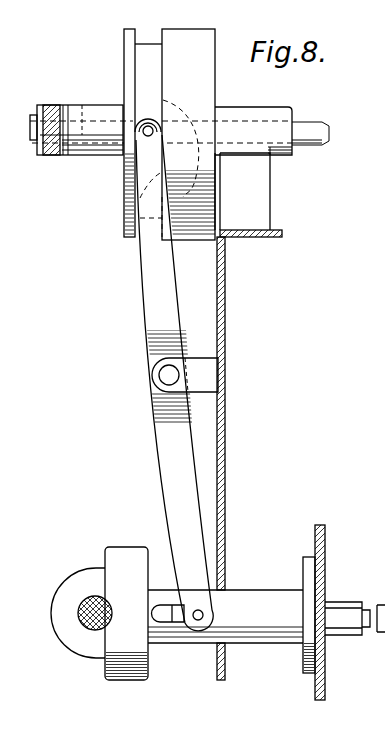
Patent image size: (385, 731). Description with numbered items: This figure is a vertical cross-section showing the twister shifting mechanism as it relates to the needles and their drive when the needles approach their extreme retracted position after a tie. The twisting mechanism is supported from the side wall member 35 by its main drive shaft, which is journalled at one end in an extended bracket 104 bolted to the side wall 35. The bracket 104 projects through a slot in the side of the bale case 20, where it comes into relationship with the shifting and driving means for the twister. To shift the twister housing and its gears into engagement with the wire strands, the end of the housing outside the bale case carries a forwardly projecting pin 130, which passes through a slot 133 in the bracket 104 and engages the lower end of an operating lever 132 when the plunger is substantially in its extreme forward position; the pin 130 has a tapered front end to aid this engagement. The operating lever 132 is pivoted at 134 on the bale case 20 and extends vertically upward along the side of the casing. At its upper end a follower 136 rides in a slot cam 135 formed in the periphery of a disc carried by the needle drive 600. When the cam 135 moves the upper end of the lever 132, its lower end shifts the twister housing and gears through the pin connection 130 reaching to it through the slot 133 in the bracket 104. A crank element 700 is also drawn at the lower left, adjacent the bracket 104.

The slot cam 135 is at (157, 8).
The follower 136 is at (147, 117).
The needle drive 600 is at (189, 139).
The operating lever 132 is at (143, 292).
The pivot 134 is at (203, 372).
The bale case 20 is at (225, 308).
The crank hub 700 is at (94, 614).
The bracket 104 is at (260, 578).
The side wall member 35 is at (325, 535).
The slot 133 is at (167, 625).
The pin 130 is at (195, 625).